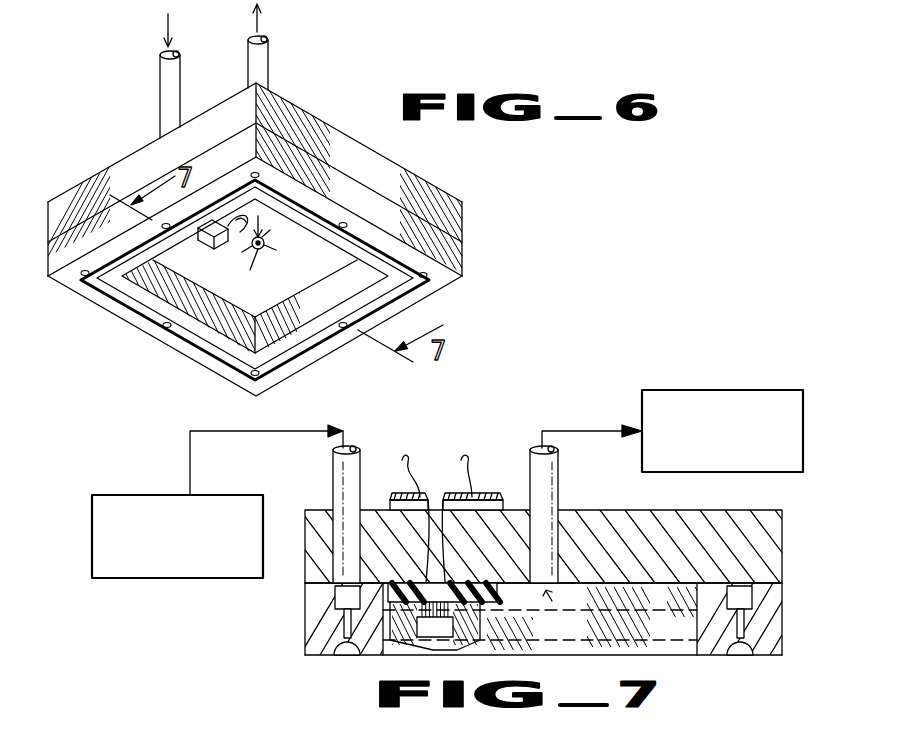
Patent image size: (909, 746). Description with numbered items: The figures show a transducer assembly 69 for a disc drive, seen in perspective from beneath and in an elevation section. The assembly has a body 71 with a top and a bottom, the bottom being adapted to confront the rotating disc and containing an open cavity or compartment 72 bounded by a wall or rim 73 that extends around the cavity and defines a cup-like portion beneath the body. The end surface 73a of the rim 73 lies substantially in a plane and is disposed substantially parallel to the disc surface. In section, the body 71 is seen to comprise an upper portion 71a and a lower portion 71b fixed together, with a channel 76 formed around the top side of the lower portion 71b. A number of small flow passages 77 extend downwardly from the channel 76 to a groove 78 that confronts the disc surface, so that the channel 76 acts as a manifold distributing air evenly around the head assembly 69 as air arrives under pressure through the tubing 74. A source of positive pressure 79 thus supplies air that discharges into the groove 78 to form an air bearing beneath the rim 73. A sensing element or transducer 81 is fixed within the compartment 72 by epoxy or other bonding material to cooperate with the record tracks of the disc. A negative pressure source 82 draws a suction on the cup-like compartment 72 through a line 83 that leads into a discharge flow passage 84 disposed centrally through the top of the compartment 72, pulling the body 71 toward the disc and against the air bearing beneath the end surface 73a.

In FIG. 6, the transducer assembly 69 is at (89, 143).
In FIG. 6, the body 71 is at (403, 200).
In FIG. 7, the upper portion 71a is at (763, 531).
In FIG. 7, the lower portion 71b is at (770, 592).
In FIG. 6, the cavity or compartment 72 is at (244, 279).
In FIG. 7, the cavity or compartment 72 is at (561, 618).
In FIG. 6, the rim 73 is at (312, 362).
In FIG. 7, the rim 73 is at (770, 613).
In FIG. 6, the end surface 73a is at (113, 307).
In FIG. 7, the end surface 73a is at (762, 656).
In FIG. 6, the tubing 74 is at (160, 76).
In FIG. 7, the tubing 74 is at (333, 452).
In FIG. 7, the channel 76 is at (337, 590).
In FIG. 7, the flow passages 77 is at (345, 622).
In FIG. 7, the groove 78 is at (344, 657).
In FIG. 7, the source of positive pressure 79 is at (143, 579).
In FIG. 6, the transducer 81 is at (212, 250).
In FIG. 7, the transducer 81 is at (397, 644).
In FIG. 7, the negative pressure source 82 is at (738, 390).
In FIG. 7, the line 83 is at (592, 431).
In FIG. 6, the discharge flow passage 84 is at (262, 237).